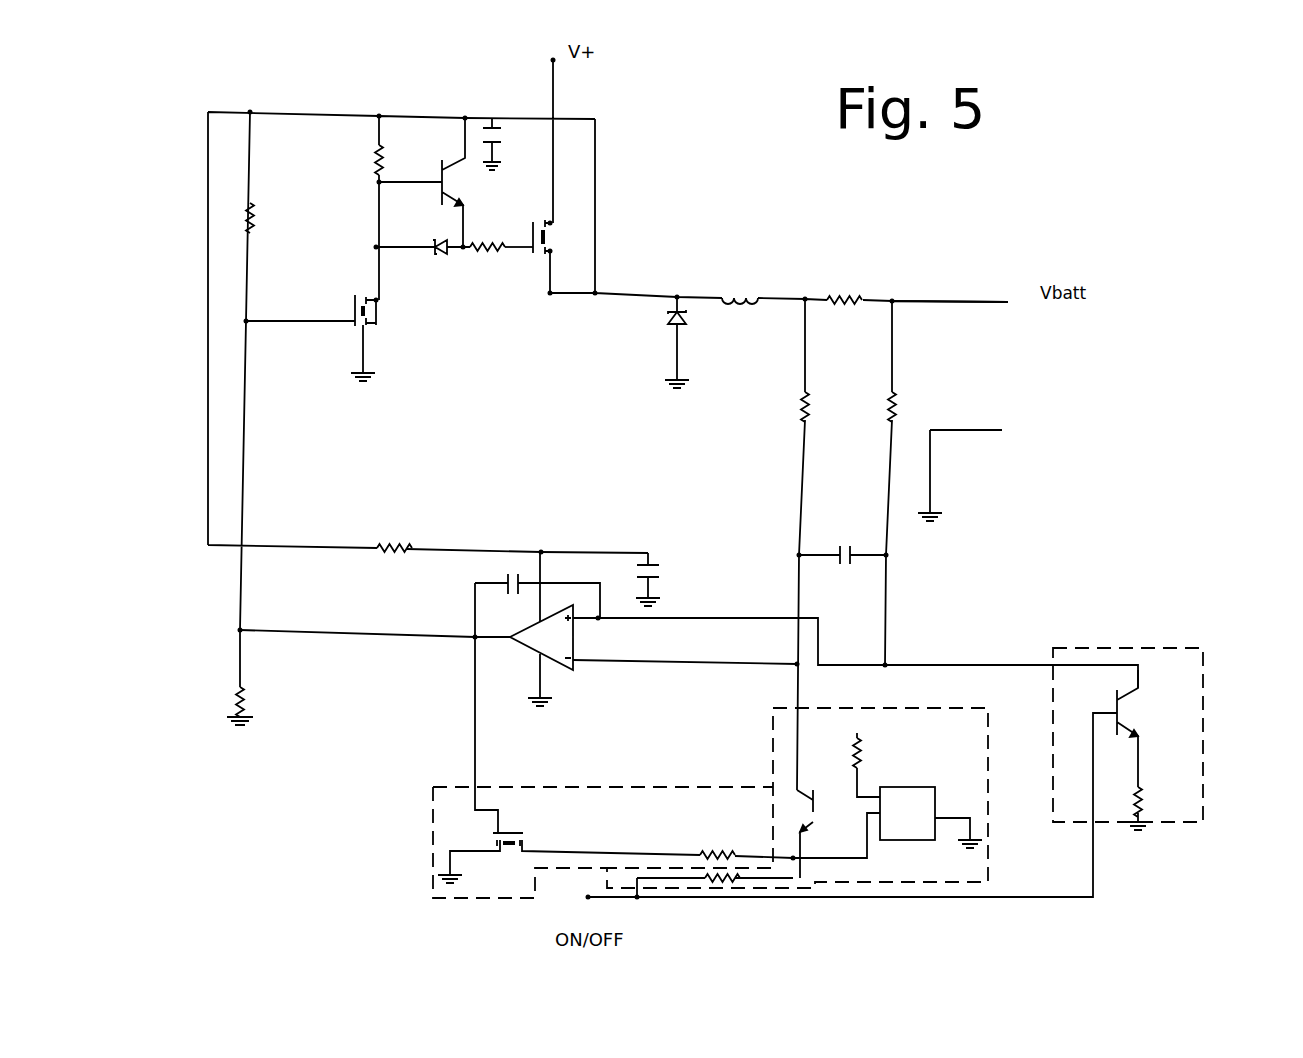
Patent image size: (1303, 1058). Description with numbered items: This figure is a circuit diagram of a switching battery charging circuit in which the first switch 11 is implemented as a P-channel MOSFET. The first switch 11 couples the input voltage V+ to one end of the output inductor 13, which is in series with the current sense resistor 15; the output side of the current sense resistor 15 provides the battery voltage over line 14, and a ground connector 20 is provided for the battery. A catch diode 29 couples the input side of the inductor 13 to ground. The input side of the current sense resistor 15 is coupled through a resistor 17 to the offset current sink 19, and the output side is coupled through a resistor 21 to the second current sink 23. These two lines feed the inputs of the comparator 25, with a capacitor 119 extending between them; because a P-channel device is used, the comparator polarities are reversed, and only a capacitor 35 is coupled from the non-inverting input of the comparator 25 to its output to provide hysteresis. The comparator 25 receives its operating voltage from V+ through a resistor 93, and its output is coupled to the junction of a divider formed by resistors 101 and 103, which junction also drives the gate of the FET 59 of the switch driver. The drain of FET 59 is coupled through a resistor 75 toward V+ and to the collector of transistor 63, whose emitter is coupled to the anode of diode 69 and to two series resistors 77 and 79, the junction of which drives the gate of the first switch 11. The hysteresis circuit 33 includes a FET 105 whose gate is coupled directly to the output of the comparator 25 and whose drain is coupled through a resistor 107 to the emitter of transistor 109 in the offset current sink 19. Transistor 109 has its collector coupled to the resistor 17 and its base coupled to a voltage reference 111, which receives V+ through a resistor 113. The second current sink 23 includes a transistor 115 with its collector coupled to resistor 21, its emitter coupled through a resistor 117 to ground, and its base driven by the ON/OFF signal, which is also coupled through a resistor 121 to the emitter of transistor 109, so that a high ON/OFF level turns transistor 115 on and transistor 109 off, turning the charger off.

The first switch 11 is at (552, 237).
The output inductor 13 is at (727, 295).
The line 14 is at (948, 297).
The current sense resistor 15 is at (834, 298).
The resistor 17 is at (800, 417).
The offset current sink 19 is at (893, 708).
The ground connector 20 is at (960, 430).
The resistor 21 is at (890, 413).
The second current sink 23 is at (1197, 763).
The comparator 25 is at (528, 646).
The catch diode 29 is at (670, 322).
The hysteresis circuit 33 is at (540, 787).
The capacitor 35 is at (520, 593).
The FET 59 is at (380, 312).
The transistor 63 is at (470, 168).
The diode 69 is at (437, 255).
The resistor 75 is at (377, 152).
The resistor 77 is at (475, 243).
The resistor 79 is at (506, 260).
The resistor 93 is at (383, 556).
The resistor 101 is at (233, 218).
The resistor 103 is at (235, 688).
The FET 105 is at (535, 845).
The resistor 107 is at (710, 855).
The transistor 109 is at (813, 832).
The voltage reference 111 is at (903, 790).
The resistor 113 is at (853, 768).
The transistor 115 is at (1125, 718).
The resistor 117 is at (1140, 808).
The capacitor 119 is at (840, 547).
The resistor 121 is at (717, 887).